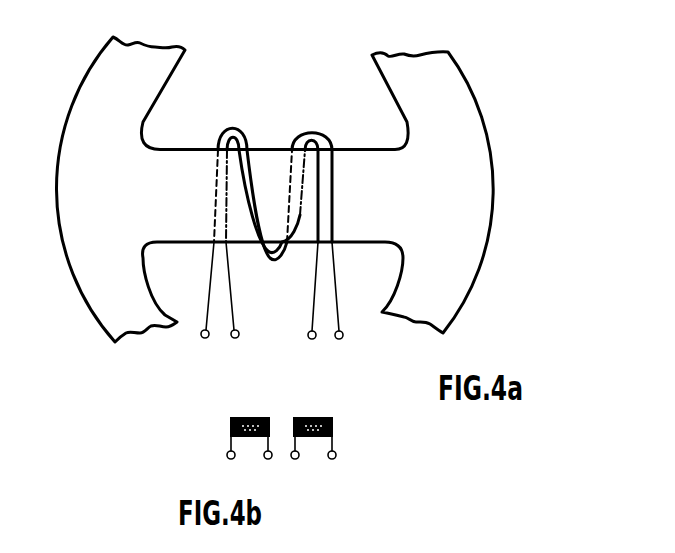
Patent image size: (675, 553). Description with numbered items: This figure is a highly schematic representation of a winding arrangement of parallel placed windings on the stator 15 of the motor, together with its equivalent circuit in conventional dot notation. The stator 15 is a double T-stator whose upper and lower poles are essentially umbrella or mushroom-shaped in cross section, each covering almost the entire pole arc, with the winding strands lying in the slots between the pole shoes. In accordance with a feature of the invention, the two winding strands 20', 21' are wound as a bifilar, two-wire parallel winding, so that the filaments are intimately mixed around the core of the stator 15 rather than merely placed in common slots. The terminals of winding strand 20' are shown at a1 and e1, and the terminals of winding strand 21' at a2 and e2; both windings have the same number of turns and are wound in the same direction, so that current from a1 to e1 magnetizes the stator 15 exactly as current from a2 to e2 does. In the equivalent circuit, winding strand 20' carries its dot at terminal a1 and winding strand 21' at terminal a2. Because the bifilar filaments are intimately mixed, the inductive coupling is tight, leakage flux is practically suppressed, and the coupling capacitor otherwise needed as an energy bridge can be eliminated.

In FIG. 4a, the stator 15 is at (453, 218).
In FIG. 4a, the winding strand 21' is at (257, 171).
In FIG. 4b, the winding strand 21' is at (263, 418).
In FIG. 4a, the winding strand 20' is at (323, 164).
In FIG. 4b, the winding strand 20' is at (318, 416).
In FIG. 4a, the terminal e1 is at (203, 338).
In FIG. 4b, the terminal e1 is at (302, 470).
In FIG. 4a, the terminal e2 is at (237, 338).
In FIG. 4b, the terminal e2 is at (220, 470).
In FIG. 4a, the terminal a1 is at (341, 339).
In FIG. 4b, the terminal a1 is at (340, 470).
In FIG. 4a, the terminal a2 is at (310, 339).
In FIG. 4b, the terminal a2 is at (270, 470).